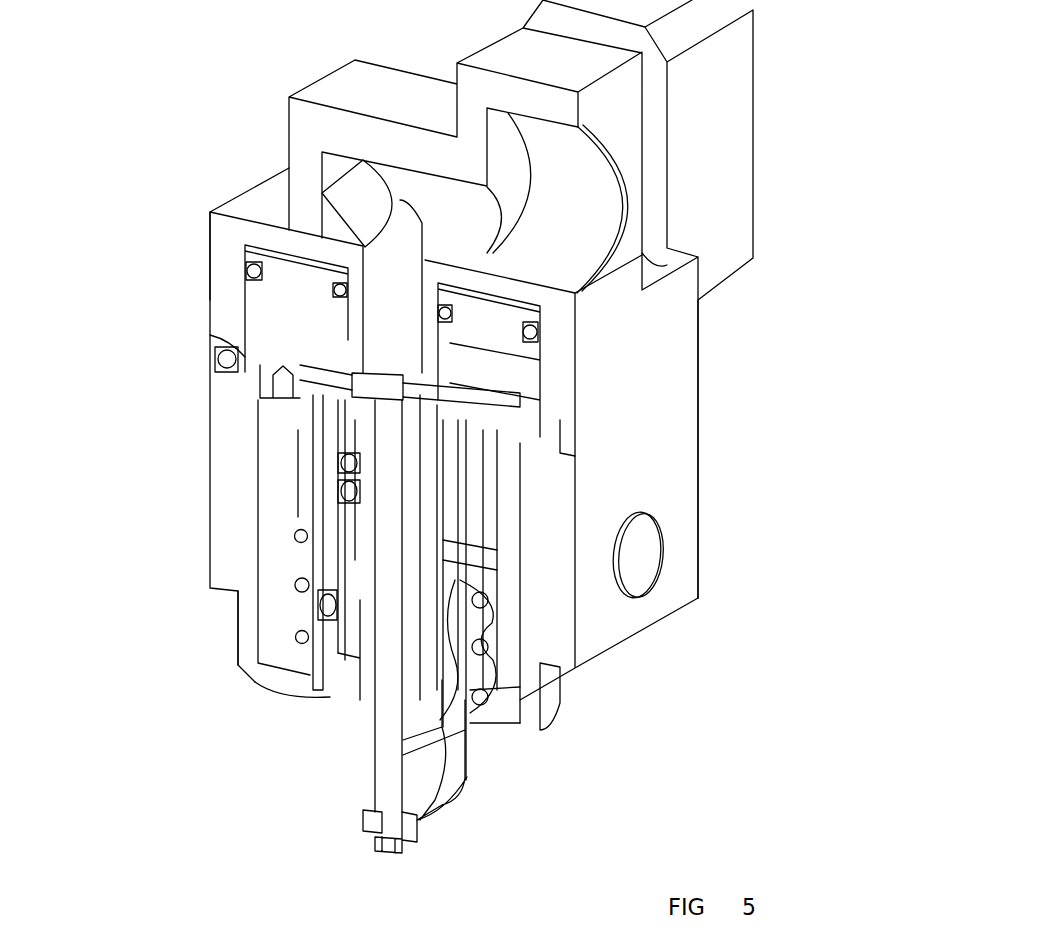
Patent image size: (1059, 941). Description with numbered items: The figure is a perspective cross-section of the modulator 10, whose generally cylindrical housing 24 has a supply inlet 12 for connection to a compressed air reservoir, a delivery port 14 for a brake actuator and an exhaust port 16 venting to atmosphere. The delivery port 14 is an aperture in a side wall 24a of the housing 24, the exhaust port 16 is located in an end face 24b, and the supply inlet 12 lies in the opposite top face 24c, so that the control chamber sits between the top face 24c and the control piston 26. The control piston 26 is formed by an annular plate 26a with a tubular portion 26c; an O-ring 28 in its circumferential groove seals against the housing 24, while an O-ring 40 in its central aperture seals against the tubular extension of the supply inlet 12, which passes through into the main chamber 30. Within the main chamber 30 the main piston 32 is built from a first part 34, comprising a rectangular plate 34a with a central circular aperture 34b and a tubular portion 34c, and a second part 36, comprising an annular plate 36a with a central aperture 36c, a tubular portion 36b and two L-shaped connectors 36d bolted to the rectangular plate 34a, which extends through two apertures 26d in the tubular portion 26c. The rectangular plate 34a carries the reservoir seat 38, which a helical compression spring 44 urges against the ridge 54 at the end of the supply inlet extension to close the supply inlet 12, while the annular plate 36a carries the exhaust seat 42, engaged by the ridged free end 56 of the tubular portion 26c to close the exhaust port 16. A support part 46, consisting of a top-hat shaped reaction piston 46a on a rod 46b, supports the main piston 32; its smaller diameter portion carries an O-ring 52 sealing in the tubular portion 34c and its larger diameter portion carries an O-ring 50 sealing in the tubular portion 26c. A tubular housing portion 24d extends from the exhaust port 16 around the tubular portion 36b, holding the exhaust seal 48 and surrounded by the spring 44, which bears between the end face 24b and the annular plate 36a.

The modulator 10 is at (707, 452).
The supply inlet 12 is at (563, 299).
The delivery port 14 is at (686, 423).
The exhaust port 16 is at (328, 606).
The housing 24 is at (678, 508).
The side wall 24a is at (167, 496).
The end face 24b is at (203, 708).
The top face 24c is at (227, 155).
The tubular housing portion 24d is at (190, 680).
The control piston 26 is at (243, 257).
The annular plate 26a is at (830, 330).
The tubular portion 26c is at (843, 525).
The apertures 26d is at (166, 303).
The O-ring 28 is at (589, 300).
The main chamber 30 is at (590, 631).
The main piston 32 is at (292, 460).
The first part 34 is at (263, 353).
The rectangular plate 34a is at (840, 390).
The central circular aperture 34b is at (168, 385).
The tubular portion 34c is at (841, 471).
The second part 36 is at (500, 532).
The annular plate 36a is at (167, 553).
The tubular portion 36b is at (173, 618).
The central aperture 36c is at (180, 648).
The L-shaped connectors 36d is at (773, 688).
The reservoir seat 38 is at (686, 498).
The O-ring 40 is at (241, 279).
The exhaust seat 42 is at (563, 691).
The helical compression spring 44 is at (593, 677).
The support part 46 is at (408, 718).
The reaction piston 46a is at (813, 656).
The rod 46b is at (327, 830).
The exhaust seal 48 is at (578, 680).
The O-ring 50 is at (763, 610).
The O-ring 52 is at (145, 357).
The ridge 54 is at (177, 320).
The free end 56 is at (177, 530).